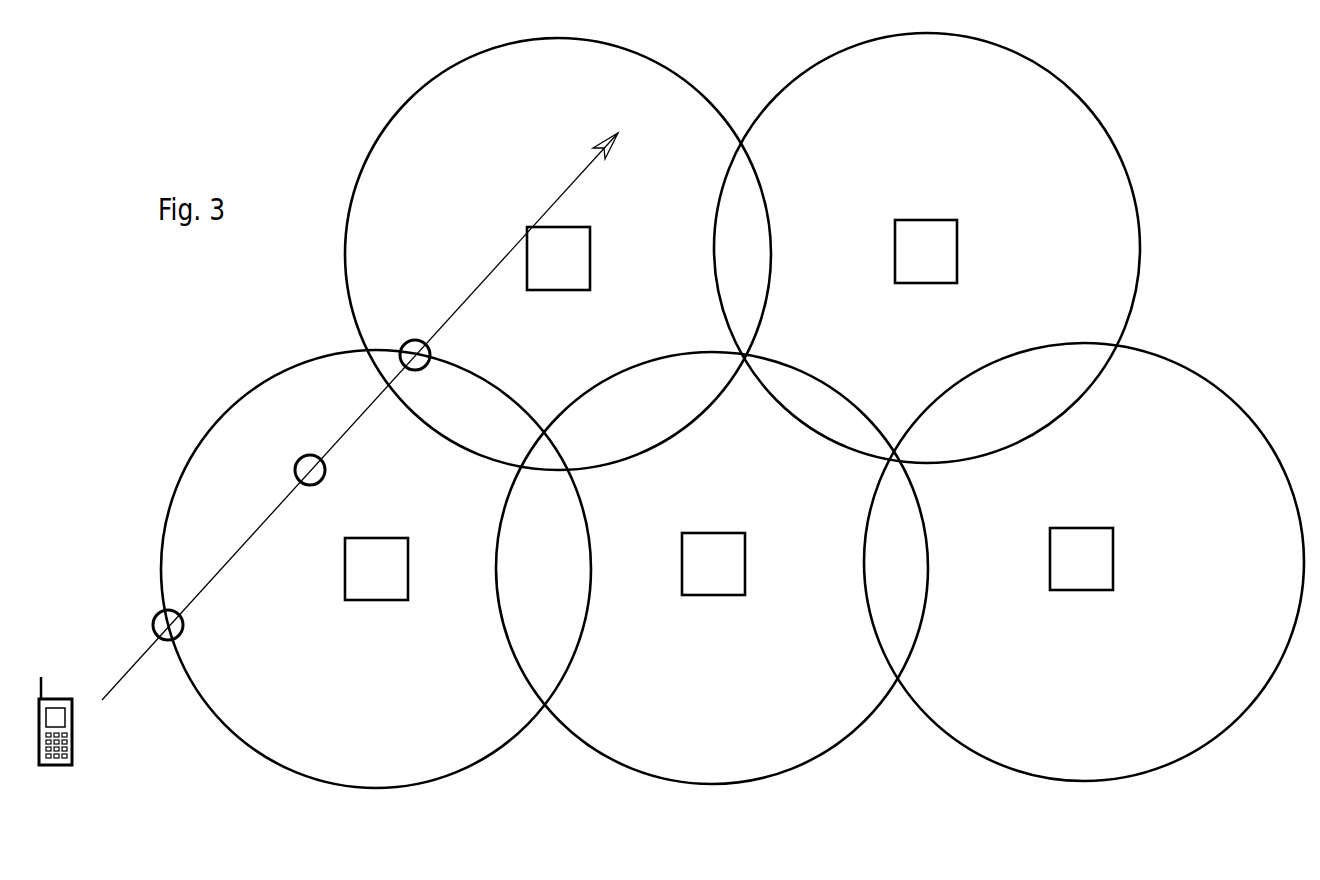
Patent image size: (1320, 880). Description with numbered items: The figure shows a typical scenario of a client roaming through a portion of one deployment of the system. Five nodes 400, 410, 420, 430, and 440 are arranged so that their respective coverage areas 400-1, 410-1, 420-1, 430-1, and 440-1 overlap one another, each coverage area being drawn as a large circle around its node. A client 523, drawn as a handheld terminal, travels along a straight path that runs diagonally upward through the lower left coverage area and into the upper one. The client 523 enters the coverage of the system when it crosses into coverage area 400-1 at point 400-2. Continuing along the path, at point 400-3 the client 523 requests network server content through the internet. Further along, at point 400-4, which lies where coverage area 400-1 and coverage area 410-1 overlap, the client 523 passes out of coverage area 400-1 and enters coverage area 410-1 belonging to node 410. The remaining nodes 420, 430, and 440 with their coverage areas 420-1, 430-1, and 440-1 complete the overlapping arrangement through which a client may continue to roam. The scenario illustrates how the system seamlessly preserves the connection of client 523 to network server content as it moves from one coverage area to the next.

The node 400 is at (376, 569).
The node 410 is at (558, 258).
The node 420 is at (926, 251).
The node 430 is at (713, 564).
The node 440 is at (1081, 559).
The coverage area 400-1 is at (520, 733).
The coverage area 410-1 is at (400, 103).
The coverage area 420-1 is at (773, 92).
The coverage area 430-1 is at (838, 760).
The coverage area 440-1 is at (973, 762).
The point 400-2 is at (167, 641).
The point 400-3 is at (326, 466).
The point 400-4 is at (431, 351).
The client 523 is at (72, 698).